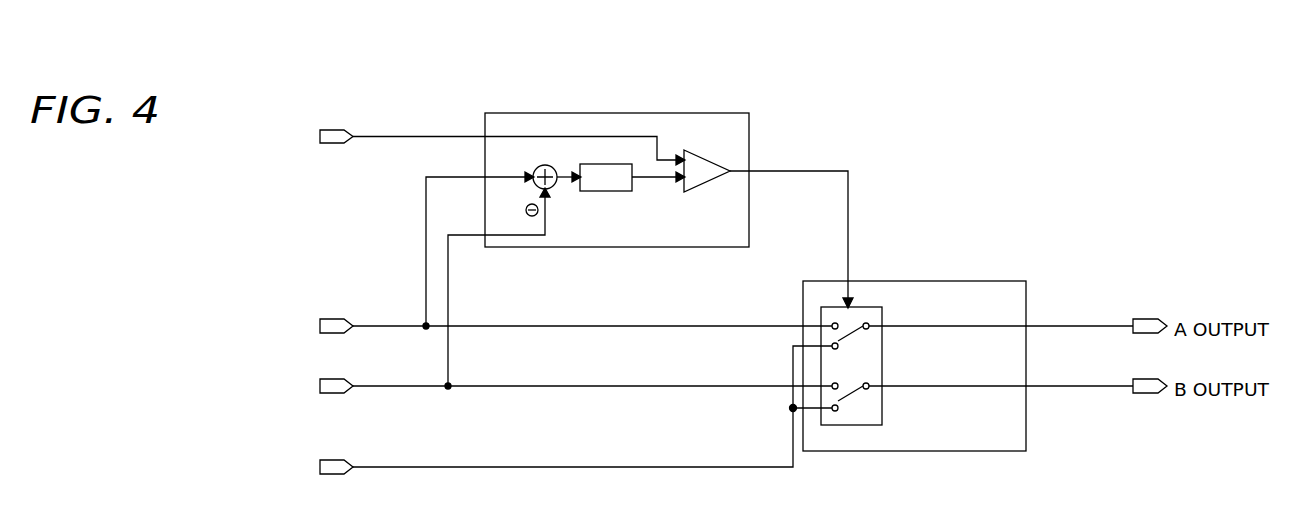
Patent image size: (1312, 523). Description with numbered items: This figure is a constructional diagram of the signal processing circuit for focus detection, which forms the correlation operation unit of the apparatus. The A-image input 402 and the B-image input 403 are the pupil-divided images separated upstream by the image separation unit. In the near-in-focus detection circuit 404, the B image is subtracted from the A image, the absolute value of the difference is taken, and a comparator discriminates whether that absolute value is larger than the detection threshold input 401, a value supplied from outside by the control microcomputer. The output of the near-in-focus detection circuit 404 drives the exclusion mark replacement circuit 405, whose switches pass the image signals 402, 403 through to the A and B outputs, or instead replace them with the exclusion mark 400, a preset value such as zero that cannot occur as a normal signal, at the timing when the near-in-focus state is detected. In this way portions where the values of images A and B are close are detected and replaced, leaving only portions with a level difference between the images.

The exclusion mark 400 is at (330, 477).
The detection threshold input 401 is at (330, 148).
The A-image input 402 is at (330, 335).
The B-image input 403 is at (330, 395).
The near-in-focus detection circuit 404 is at (749, 138).
The exclusion mark replacement circuit 405 is at (1026, 303).